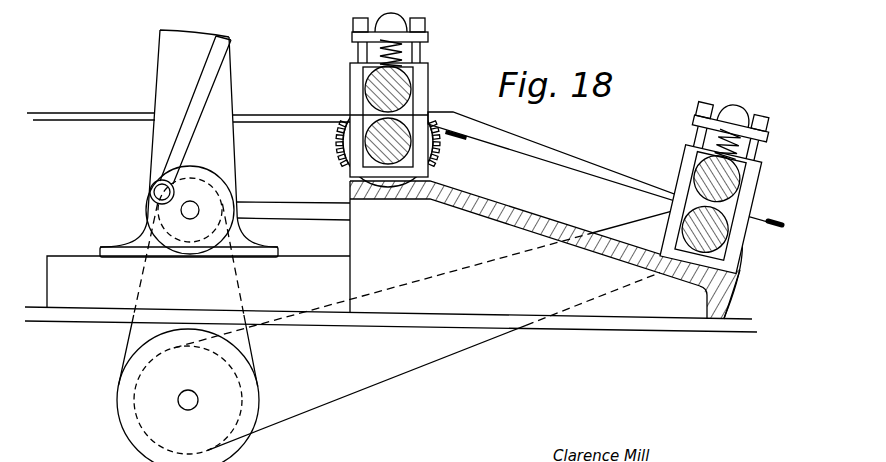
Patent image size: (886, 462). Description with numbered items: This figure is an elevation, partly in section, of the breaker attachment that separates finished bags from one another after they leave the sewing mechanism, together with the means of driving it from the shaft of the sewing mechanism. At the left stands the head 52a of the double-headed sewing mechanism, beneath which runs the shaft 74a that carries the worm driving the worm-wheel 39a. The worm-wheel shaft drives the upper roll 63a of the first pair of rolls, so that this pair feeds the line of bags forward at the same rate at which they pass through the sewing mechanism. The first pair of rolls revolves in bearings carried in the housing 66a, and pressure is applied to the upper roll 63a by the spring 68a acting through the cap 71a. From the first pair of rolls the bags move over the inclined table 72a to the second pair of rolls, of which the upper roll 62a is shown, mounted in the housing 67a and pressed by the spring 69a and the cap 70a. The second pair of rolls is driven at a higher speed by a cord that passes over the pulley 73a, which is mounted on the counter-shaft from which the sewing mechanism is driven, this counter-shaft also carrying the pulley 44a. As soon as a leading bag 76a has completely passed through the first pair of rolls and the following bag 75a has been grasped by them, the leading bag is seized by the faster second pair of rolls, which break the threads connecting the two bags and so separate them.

The head of the sewing mechanism 52a is at (168, 56).
The shaft 74a is at (267, 207).
The pulley 44a is at (120, 373).
The pulley 73a is at (240, 383).
The worm-wheel 39a is at (336, 145).
The housing 66a is at (418, 80).
The upper roll of the first pair of rolls 63a is at (365, 90).
The cap 71a is at (358, 35).
The spring 68a is at (400, 55).
The table 72a is at (510, 150).
The following bag 75a is at (463, 133).
The bag 76a is at (770, 227).
The housing 67a is at (750, 188).
The upper roll of the second pair of rolls 62a is at (700, 167).
The cap 70a is at (697, 115).
The spring 69a is at (747, 147).